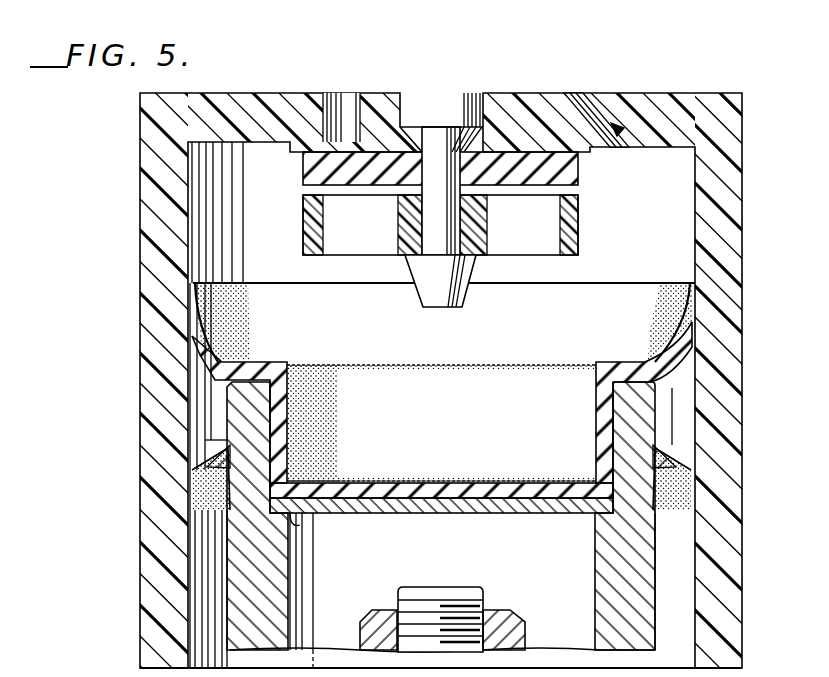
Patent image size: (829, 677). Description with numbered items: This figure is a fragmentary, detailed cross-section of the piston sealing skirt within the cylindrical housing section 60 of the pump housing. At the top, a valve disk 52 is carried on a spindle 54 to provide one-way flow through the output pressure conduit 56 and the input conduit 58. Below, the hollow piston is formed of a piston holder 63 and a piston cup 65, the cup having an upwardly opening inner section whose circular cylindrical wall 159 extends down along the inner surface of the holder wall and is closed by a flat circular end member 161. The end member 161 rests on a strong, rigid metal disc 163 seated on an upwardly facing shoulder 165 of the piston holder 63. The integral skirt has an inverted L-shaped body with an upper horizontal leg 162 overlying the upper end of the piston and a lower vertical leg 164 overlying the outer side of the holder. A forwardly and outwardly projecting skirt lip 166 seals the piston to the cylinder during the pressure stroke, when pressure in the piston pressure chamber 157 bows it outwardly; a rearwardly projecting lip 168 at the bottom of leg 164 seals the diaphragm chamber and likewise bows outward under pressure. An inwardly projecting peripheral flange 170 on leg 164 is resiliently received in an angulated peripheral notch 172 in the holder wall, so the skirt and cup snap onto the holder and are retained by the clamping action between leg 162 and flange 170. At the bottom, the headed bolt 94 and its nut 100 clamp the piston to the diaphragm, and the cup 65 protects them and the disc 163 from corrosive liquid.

The valve disk 52 is at (303, 167).
The spindle 54 is at (467, 97).
The output pressure conduit 56 is at (630, 160).
The input conduit 58 is at (344, 108).
The cylindrical housing section 60 is at (735, 328).
The piston holder 63 is at (283, 578).
The piston cup 65 is at (442, 434).
The headed bolt 94 is at (487, 600).
The nut 100 is at (380, 615).
The piston pressure chamber 157 is at (682, 233).
The circular cylindrical wall 159 is at (596, 425).
The flat circular end member 161 is at (458, 483).
The upper horizontal leg 162 is at (252, 362).
The rigid metal disc 163 is at (458, 513).
The lower vertical leg 164 is at (218, 388).
The shoulder 165 is at (298, 530).
The peripheral skirt lip 166 is at (192, 339).
The peripheral skirt lip 168 is at (225, 468).
The inwardly projecting peripheral flange 170 is at (232, 465).
The angulated peripheral notch 172 is at (230, 442).